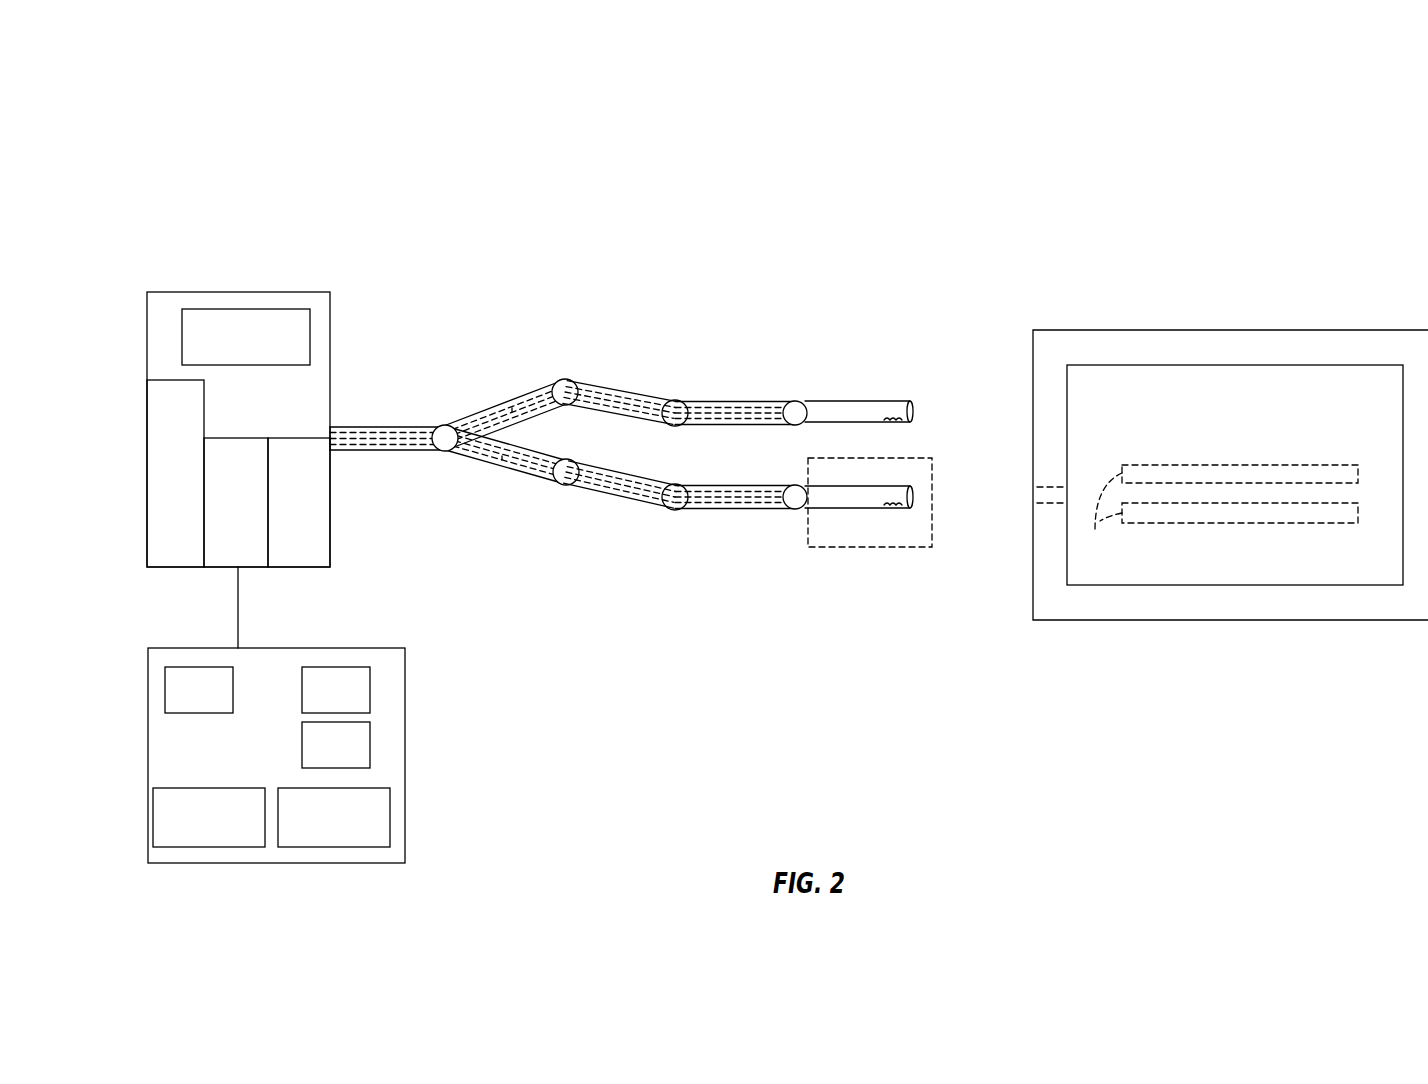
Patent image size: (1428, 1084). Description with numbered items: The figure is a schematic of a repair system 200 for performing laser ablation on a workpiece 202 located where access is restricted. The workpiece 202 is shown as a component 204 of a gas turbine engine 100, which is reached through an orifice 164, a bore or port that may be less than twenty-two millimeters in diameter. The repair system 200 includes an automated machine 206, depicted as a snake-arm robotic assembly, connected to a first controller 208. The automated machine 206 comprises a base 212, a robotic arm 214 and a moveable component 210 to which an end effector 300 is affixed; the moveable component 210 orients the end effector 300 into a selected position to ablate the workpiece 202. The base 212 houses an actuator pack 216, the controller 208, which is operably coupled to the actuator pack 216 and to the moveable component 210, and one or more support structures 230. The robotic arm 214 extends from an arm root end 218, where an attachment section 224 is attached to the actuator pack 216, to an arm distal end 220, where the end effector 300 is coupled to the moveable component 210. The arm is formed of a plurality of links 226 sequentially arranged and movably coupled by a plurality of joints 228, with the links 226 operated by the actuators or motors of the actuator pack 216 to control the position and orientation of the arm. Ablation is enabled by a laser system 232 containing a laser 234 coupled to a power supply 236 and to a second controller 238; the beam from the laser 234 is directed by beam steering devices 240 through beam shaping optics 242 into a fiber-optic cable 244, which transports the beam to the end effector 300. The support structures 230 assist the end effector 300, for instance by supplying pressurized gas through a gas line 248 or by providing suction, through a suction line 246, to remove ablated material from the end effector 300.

The gas turbine engine 100 is at (1345, 345).
The orifice 164 is at (1063, 497).
The repair system 200 is at (1260, 142).
The workpiece 202 is at (1342, 523).
The component 204 is at (1098, 520).
The automated machine 206 is at (335, 250).
The first controller 208 is at (207, 309).
The moveable component 210 is at (793, 401).
The base 212 is at (147, 340).
The robotic arm 214 is at (454, 318).
The actuator pack 216 is at (254, 523).
The arm root end 218 is at (330, 450).
The arm distal end 220 is at (913, 448).
The attachment section 224 is at (317, 523).
The links 226 is at (520, 452).
The joints 228 is at (448, 425).
The support structures 230 is at (191, 523).
The laser system 232 is at (133, 796).
The laser 234 is at (165, 697).
The power supply 236 is at (390, 827).
The second controller 238 is at (198, 847).
The beam steering devices 240 is at (353, 756).
The beam shaping optics 242 is at (353, 702).
The fiber-optic cable 244 is at (770, 418).
The suction line 246 is at (512, 410).
The gas line 248 is at (388, 428).
The end effector 300 is at (914, 410).